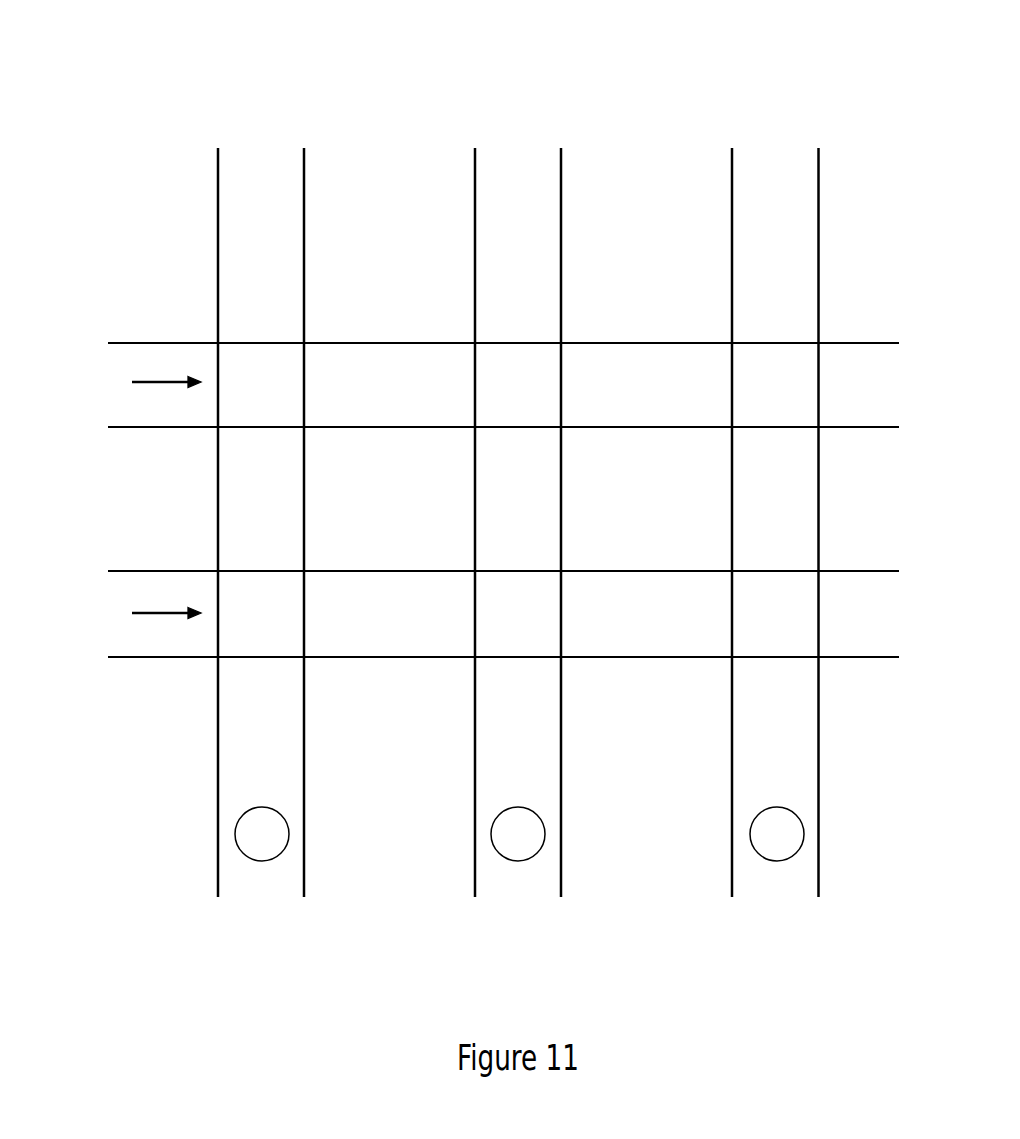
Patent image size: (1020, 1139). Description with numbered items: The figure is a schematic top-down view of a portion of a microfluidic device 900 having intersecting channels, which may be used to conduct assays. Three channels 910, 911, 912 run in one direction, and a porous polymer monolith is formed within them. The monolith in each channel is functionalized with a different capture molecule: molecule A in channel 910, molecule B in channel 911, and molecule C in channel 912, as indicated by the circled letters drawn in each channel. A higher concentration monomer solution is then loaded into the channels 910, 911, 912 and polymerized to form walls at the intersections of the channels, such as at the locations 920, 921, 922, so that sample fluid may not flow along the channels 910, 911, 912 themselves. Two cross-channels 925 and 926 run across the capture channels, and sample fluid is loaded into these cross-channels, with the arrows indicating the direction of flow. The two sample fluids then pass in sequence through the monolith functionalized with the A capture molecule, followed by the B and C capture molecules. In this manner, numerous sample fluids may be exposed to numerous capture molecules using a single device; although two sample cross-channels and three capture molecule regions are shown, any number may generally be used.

The microfluidic device 900 is at (822, 29).
The channel 910 is at (258, 902).
The channel 911 is at (513, 902).
The channel 912 is at (771, 897).
The location 920 is at (240, 428).
The location 921 is at (497, 428).
The location 922 is at (760, 428).
The cross-channel 925 is at (93, 381).
The cross-channel 926 is at (93, 614).